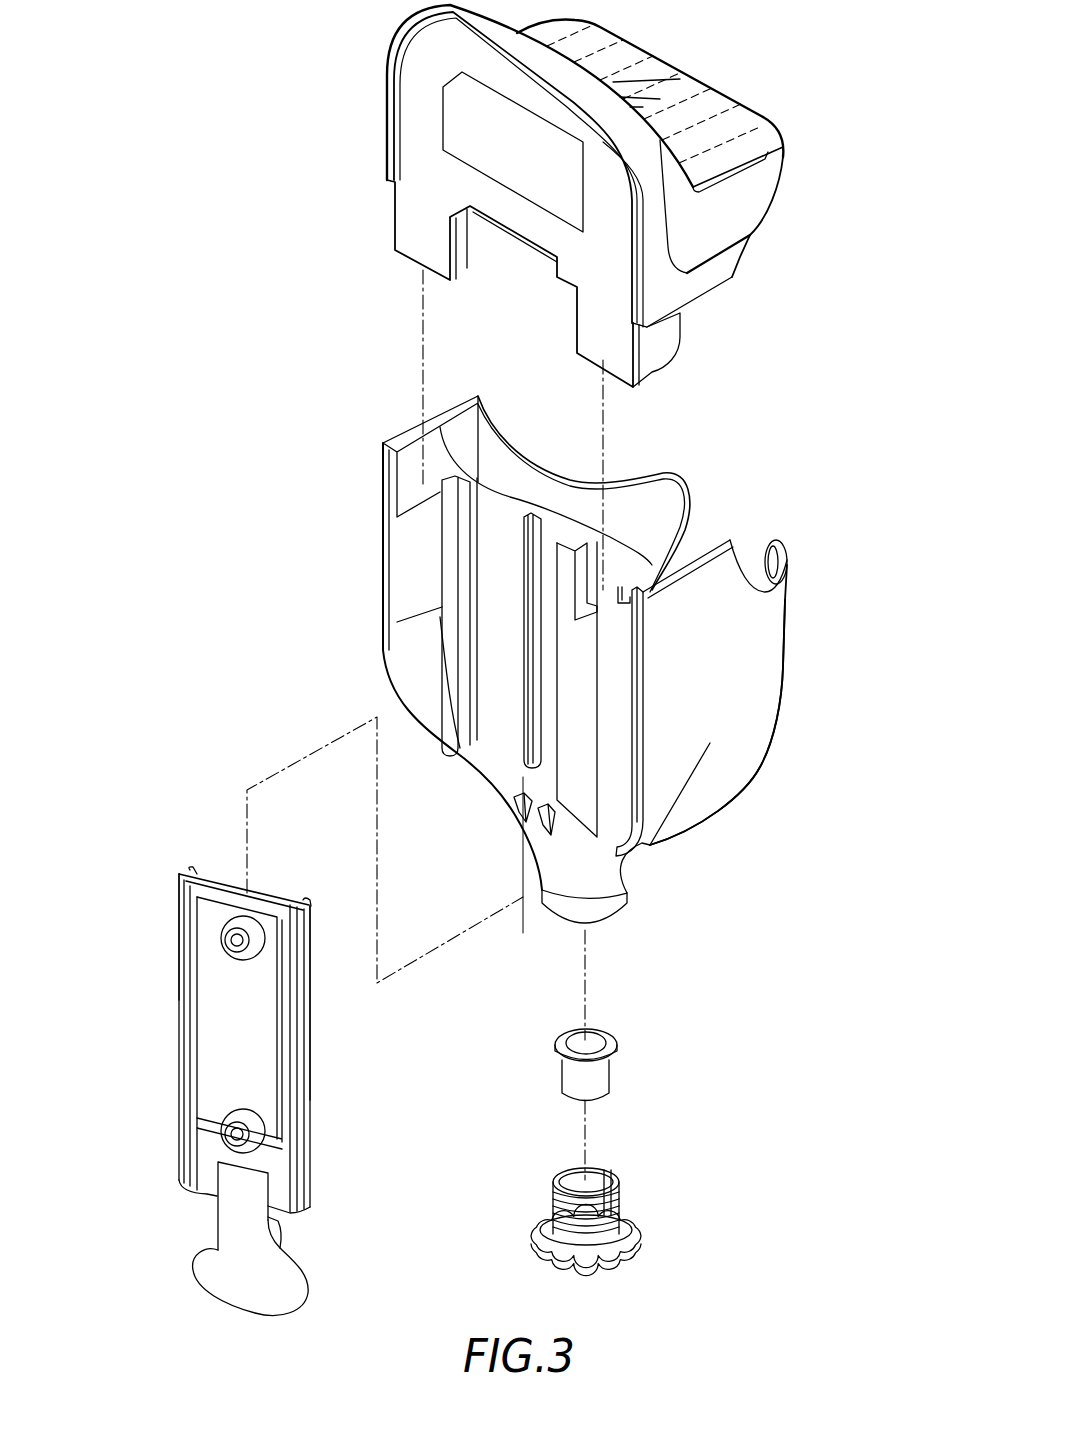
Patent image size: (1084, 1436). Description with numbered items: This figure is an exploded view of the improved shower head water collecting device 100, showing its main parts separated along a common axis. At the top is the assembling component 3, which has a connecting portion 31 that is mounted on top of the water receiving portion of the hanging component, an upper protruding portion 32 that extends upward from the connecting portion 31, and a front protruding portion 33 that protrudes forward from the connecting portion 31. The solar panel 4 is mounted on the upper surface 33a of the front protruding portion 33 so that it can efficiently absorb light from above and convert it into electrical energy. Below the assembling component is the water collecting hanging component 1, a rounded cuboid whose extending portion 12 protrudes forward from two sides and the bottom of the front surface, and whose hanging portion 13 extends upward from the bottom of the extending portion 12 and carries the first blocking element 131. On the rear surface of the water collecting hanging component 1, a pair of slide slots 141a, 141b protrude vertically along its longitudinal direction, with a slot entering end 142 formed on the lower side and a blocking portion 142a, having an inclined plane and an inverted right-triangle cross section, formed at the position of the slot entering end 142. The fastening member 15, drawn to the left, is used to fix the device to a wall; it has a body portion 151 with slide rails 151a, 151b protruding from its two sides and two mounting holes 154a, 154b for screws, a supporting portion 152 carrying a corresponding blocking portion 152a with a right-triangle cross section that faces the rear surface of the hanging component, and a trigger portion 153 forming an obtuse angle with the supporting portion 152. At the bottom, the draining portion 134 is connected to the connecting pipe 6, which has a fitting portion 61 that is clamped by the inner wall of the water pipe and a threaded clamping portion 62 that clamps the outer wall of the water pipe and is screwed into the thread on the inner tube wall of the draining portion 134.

The improved shower head water collecting device 100 is at (270, 74).
The water collecting hanging component 1 is at (768, 710).
The assembling component 3 is at (867, 132).
The solar panel 4 is at (665, 83).
The connecting pipe 6 is at (712, 1053).
The extending portion 12 is at (703, 790).
The hanging portion 13 is at (770, 563).
The fastening member 15 is at (438, 1117).
The connecting portion 31 is at (720, 267).
The upper protruding portion 32 is at (648, 165).
The front protruding portion 33 is at (750, 190).
The upper surface 33a is at (767, 130).
The fitting portion 61 is at (603, 1077).
The clamping portion 62 is at (643, 1217).
The first blocking element 131 is at (762, 647).
The draining portion 134 is at (607, 873).
The slide slot 141a is at (443, 555).
The slide slot 141b is at (567, 543).
The slot entering end 142 is at (503, 750).
The blocking portion 142a is at (522, 803).
The body portion 151 is at (312, 1130).
The slide rail 151a is at (312, 1030).
The slide rail 151b is at (182, 903).
The supporting portion 152 is at (243, 1213).
The corresponding blocking portion 152a is at (278, 1223).
The trigger portion 153 is at (268, 1282).
The mounting hole 154a is at (234, 939).
The mounting hole 154b is at (233, 1135).